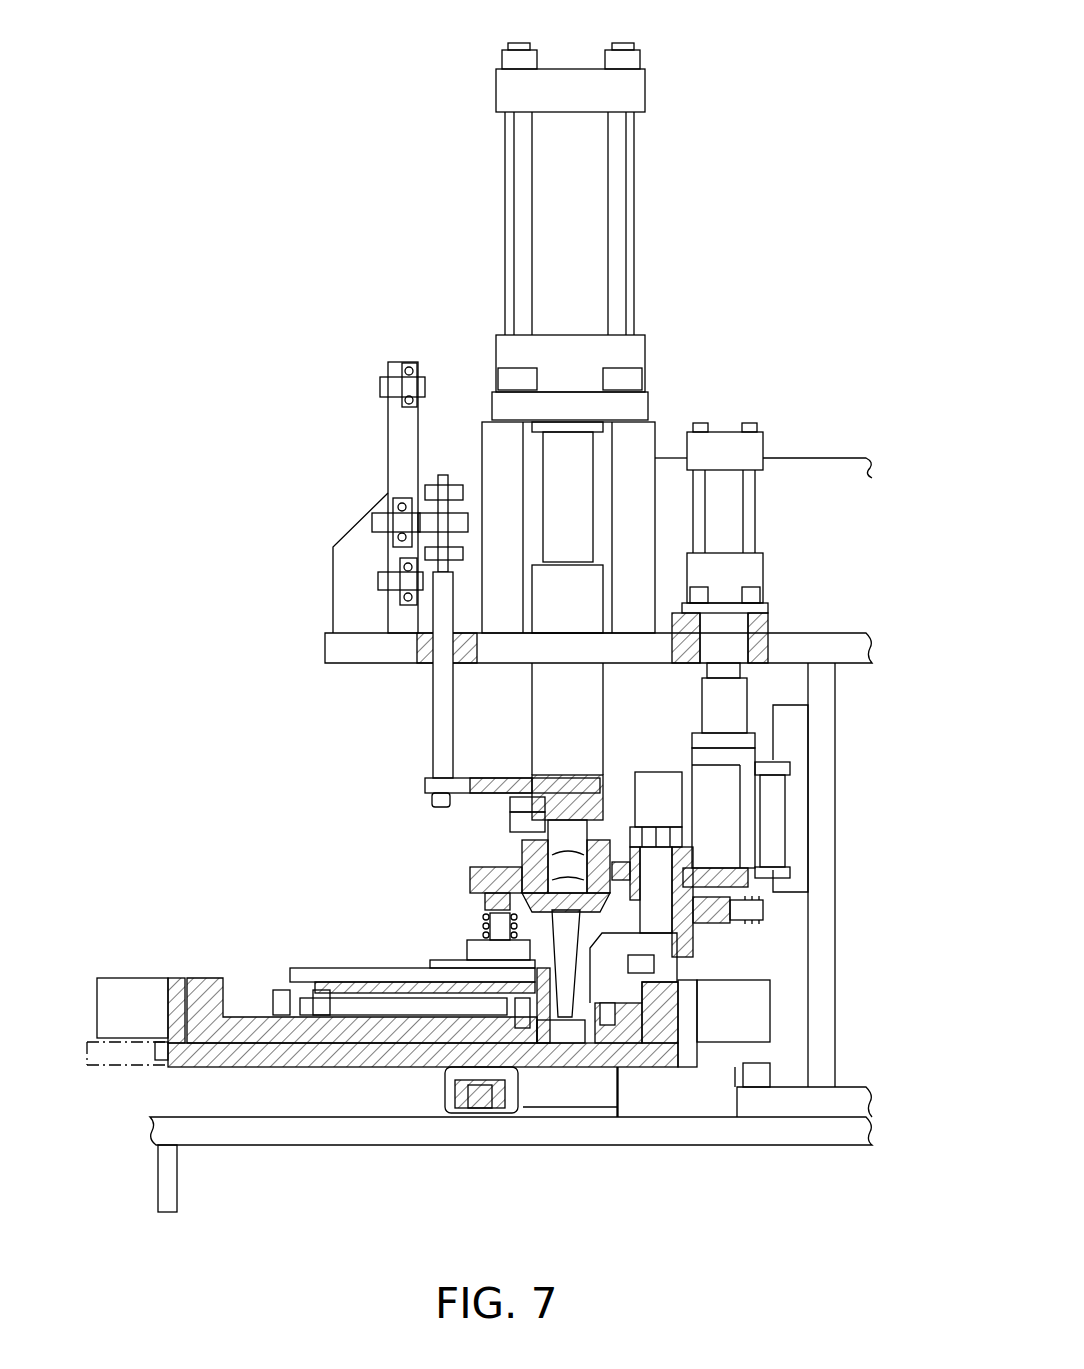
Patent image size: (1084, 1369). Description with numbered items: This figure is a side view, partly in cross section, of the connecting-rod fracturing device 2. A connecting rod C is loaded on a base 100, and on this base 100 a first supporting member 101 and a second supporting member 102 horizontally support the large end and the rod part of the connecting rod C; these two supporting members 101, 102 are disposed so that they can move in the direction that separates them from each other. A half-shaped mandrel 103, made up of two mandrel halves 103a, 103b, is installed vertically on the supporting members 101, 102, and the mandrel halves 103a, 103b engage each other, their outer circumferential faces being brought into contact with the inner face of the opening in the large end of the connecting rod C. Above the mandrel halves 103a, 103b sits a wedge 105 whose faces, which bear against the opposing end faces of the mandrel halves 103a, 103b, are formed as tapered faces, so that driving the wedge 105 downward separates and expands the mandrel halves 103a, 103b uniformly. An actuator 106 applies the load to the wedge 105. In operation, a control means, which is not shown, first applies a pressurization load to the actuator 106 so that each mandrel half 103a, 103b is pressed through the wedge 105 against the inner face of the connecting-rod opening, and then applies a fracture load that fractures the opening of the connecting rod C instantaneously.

The connecting-rod fracturing device 2 is at (598, 565).
The base 100 is at (307, 1068).
The first supporting member 101 is at (388, 1045).
The second supporting member 102 is at (655, 1035).
The half-shaped mandrel 103 is at (633, 1183).
The mandrel half 103a is at (550, 1020).
The mandrel half 103b is at (588, 1030).
The wedge 105 is at (472, 899).
The actuator 106 is at (528, 725).
The connecting rod C is at (357, 985).